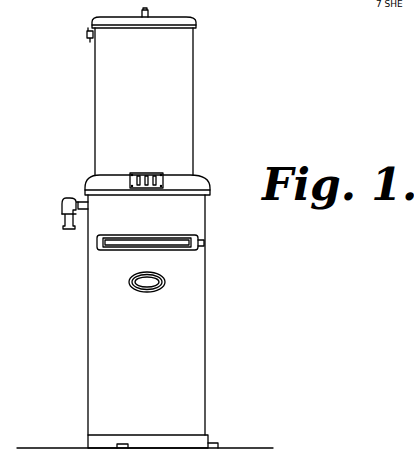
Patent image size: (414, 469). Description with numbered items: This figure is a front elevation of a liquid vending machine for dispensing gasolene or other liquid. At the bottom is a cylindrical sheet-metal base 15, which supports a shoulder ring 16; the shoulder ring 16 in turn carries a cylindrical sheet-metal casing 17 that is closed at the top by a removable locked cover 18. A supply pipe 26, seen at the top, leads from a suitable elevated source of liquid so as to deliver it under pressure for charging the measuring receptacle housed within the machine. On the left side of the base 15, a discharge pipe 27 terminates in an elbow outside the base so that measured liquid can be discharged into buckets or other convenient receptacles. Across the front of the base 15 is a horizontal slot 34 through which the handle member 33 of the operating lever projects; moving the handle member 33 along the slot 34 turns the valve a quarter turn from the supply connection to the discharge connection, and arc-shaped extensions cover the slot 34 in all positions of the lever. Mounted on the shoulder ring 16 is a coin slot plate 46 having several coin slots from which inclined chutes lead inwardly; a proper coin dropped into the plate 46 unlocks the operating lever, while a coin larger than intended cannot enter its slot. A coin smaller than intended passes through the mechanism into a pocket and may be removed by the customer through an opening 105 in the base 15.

The base 15 is at (205, 355).
The shoulder ring 16 is at (203, 185).
The casing 17 is at (188, 91).
The removable locked cover 18 is at (197, 22).
The supply pipe 26 is at (148, 12).
The discharge pipe 27 is at (64, 220).
The handle member 33 is at (204, 244).
The horizontal slot 34 is at (165, 240).
The coin slot plate 46 is at (156, 176).
The opening 105 is at (148, 282).